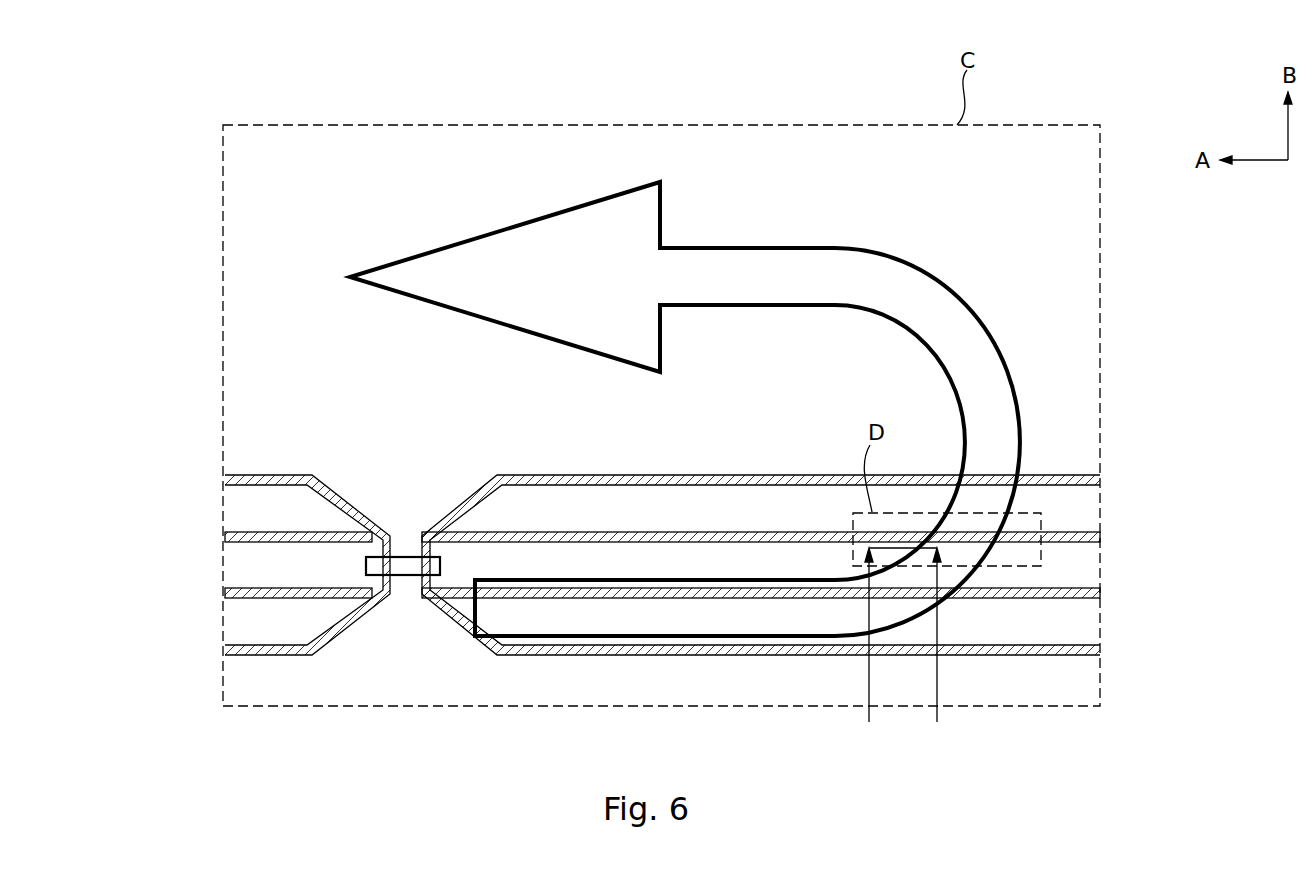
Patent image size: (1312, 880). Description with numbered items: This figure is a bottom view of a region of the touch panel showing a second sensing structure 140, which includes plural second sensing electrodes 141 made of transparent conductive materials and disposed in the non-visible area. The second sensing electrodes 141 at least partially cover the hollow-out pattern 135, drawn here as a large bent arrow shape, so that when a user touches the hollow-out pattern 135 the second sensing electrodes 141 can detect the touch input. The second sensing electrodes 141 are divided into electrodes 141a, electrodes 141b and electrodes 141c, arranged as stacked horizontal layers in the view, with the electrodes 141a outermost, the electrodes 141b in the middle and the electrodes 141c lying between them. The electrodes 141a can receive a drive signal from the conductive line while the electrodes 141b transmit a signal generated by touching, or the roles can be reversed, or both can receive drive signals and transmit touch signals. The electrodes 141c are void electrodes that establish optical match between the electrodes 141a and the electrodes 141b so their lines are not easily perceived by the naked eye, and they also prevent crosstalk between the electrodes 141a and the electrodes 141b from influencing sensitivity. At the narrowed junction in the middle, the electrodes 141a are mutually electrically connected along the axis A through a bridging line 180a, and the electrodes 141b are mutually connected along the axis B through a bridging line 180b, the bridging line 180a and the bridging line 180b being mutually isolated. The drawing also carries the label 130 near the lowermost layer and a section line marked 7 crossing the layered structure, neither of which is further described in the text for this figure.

The second sensing structure 140 is at (210, 108).
The hollow-out pattern 135 is at (606, 215).
The second sensing electrodes 141 is at (627, 571).
The electrodes 141a is at (246, 452).
The electrodes 141b is at (665, 564).
The electrodes 141c is at (246, 507).
The bridging line 180a is at (403, 583).
The bridging line 180b is at (372, 567).
The substrate 130 is at (1003, 657).
The section line 7- 7 is at (903, 651).